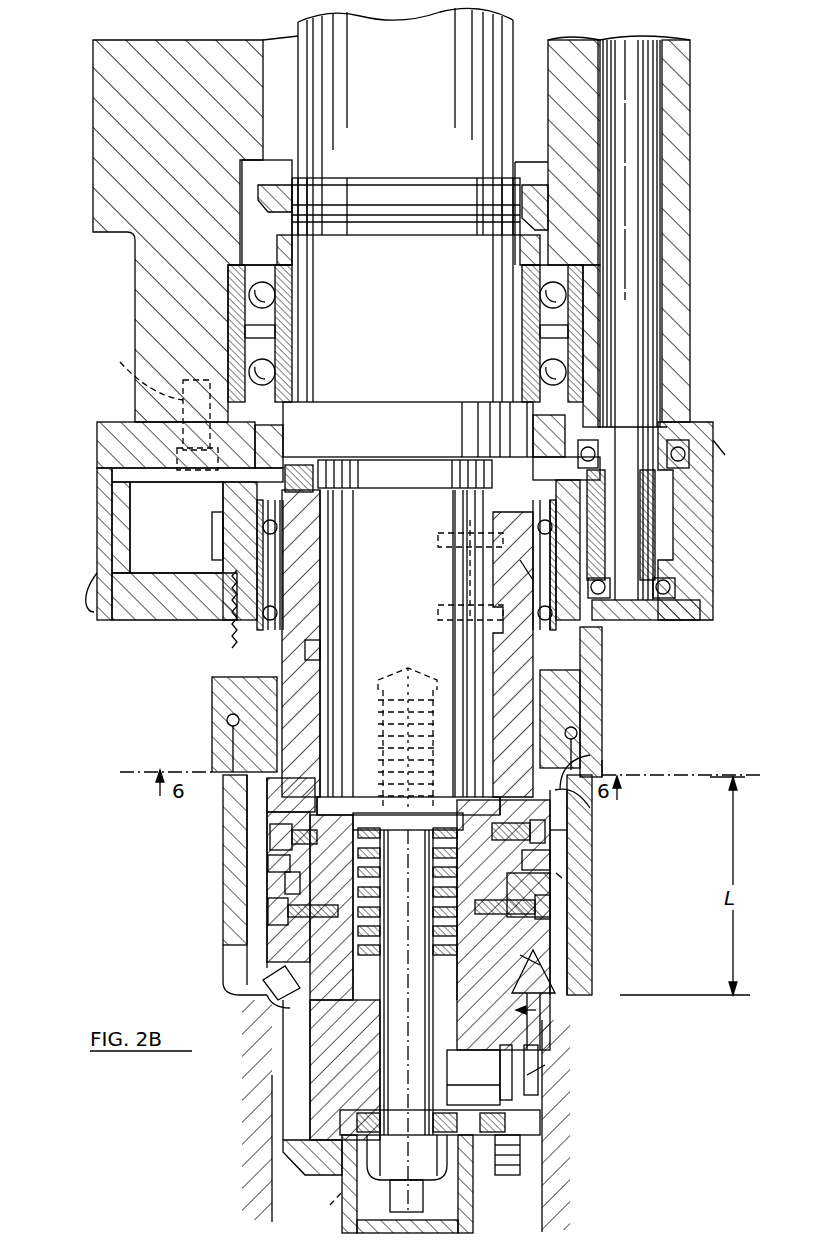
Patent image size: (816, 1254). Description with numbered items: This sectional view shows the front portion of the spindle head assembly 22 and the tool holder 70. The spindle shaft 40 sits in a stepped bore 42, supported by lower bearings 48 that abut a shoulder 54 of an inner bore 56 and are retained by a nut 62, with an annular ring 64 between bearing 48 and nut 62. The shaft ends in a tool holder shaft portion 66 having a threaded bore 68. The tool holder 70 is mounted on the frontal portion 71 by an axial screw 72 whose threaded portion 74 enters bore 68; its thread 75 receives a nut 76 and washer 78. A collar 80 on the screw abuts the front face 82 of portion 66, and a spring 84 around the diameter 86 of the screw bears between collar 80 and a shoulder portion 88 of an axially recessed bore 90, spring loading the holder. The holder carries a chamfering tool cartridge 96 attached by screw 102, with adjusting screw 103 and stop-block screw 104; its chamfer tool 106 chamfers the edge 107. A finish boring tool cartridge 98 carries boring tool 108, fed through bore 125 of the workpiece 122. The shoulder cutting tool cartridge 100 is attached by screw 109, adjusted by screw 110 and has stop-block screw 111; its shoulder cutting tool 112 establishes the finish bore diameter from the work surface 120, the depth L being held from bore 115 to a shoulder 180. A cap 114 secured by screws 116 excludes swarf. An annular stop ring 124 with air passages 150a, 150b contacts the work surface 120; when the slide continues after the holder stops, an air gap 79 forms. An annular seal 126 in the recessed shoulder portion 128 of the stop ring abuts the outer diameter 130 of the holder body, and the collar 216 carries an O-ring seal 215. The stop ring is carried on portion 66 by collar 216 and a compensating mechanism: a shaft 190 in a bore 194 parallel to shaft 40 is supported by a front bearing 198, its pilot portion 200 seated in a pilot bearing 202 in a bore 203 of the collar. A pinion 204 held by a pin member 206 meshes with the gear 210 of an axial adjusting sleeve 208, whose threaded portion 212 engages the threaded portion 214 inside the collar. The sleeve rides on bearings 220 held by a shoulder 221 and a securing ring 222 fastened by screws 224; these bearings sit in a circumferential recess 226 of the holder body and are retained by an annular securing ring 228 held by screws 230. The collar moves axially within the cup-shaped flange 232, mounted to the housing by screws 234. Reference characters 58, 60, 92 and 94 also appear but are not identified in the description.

The spindle head assembly 22 is at (105, 128).
The spindle shaft 40 is at (420, 130).
The stepped bore 42 is at (283, 46).
The lower bearings 48 is at (228, 320).
The shoulder 54 is at (583, 270).
The inner bore 56 is at (568, 173).
The bearing race 58 is at (520, 400).
The spindle housing block 60 is at (420, 436).
The nut 62 is at (270, 190).
The annular ring 64 is at (330, 246).
The tool holder shaft portion 66 is at (422, 581).
The threaded bore 68 is at (392, 680).
The tool holder 70 is at (545, 1010).
The frontal portion 71 is at (482, 812).
The axial screw 72 is at (420, 1109).
The threaded portion 74 is at (427, 680).
The thread 75 is at (317, 1210).
The nut 76 is at (473, 1195).
The washer 78 is at (340, 1125).
The air gap 79 is at (480, 1118).
The collar 80 is at (408, 821).
The front face 82 is at (267, 818).
The spring 84 is at (445, 1005).
The diameter 86 is at (520, 948).
The shoulder portion 88 is at (368, 966).
The axially recessed bore 90 is at (540, 962).
The channel 92 is at (562, 830).
The sleeve flange 94 is at (350, 812).
The chamfering tool cartridge 96 is at (270, 962).
The finish boring tool cartridge 98 is at (548, 1063).
The shoulder cutting tool cartridge 100 is at (550, 930).
The screw 102 is at (270, 913).
The adjusting screw 103 is at (268, 866).
The screw 104 is at (272, 840).
The chamfer tool 106 is at (262, 982).
The edge 107 is at (270, 1002).
The boring tool 108 is at (545, 1075).
The screw 109 is at (555, 905).
The screw 110 is at (550, 865).
The screw 111 is at (545, 840).
The shoulder cutting tool 112 is at (560, 982).
The cap 114 is at (305, 1168).
The bore 115 is at (560, 880).
The screws 116 is at (520, 1160).
The work surface 120 is at (620, 770).
The workpiece 122 is at (262, 1086).
The annular stop ring 124 is at (586, 688).
The bore 125 is at (575, 1025).
The annular seal 126 is at (585, 765).
The recessed shoulder portion 128 is at (575, 715).
The outer diameter 130 is at (592, 808).
The air passage 150a is at (600, 752).
The air passage 150b is at (222, 745).
The shoulder 180 is at (555, 1000).
The shaft 190 is at (645, 330).
The bore 194 is at (668, 112).
The front bearing 198 is at (690, 428).
The pilot portion 200 is at (630, 515).
The pilot bearing 202 is at (673, 590).
The bore 203 is at (672, 608).
The pinion 204 is at (667, 552).
The pin member 206 is at (739, 453).
The axial adjusting sleeve 208 is at (238, 548).
The gear 210 is at (210, 527).
The threaded portion 212 is at (570, 630).
The threaded portion 214 is at (230, 655).
The O-ring seal 215 is at (212, 703).
The collar 216 is at (142, 622).
The bearings 220 is at (232, 628).
The shoulder 221 is at (322, 620).
The securing ring 222 is at (538, 500).
The screws 224 is at (556, 470).
The circumferential recess 226 is at (520, 570).
The annular securing ring 228 is at (318, 500).
The screws 230 is at (300, 466).
The cup-shaped flange 232 is at (85, 610).
The screws 234 is at (147, 405).